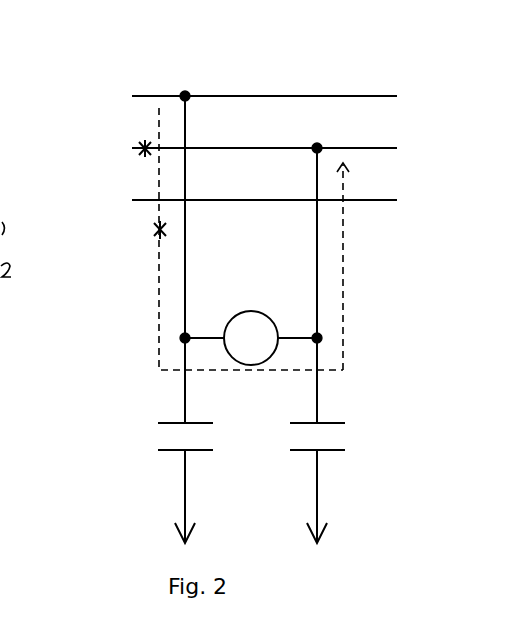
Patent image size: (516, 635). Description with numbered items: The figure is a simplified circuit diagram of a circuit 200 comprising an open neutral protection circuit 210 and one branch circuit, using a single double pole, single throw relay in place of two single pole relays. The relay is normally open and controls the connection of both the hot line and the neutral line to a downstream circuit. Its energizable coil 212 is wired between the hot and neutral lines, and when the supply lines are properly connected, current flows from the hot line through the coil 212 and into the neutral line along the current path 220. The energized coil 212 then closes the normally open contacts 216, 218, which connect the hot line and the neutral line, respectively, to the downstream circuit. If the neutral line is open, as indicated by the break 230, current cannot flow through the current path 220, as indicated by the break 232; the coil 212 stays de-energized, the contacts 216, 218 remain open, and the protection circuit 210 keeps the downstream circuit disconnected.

The simplified circuit 200 is at (66, 75).
The open neutral protection circuit 210 is at (110, 261).
The energizable coil 212 is at (273, 313).
The relay contact 216 is at (197, 450).
The relay contact 218 is at (302, 448).
The current path 220 is at (344, 251).
The break 230 is at (146, 163).
The break 232 is at (168, 212).